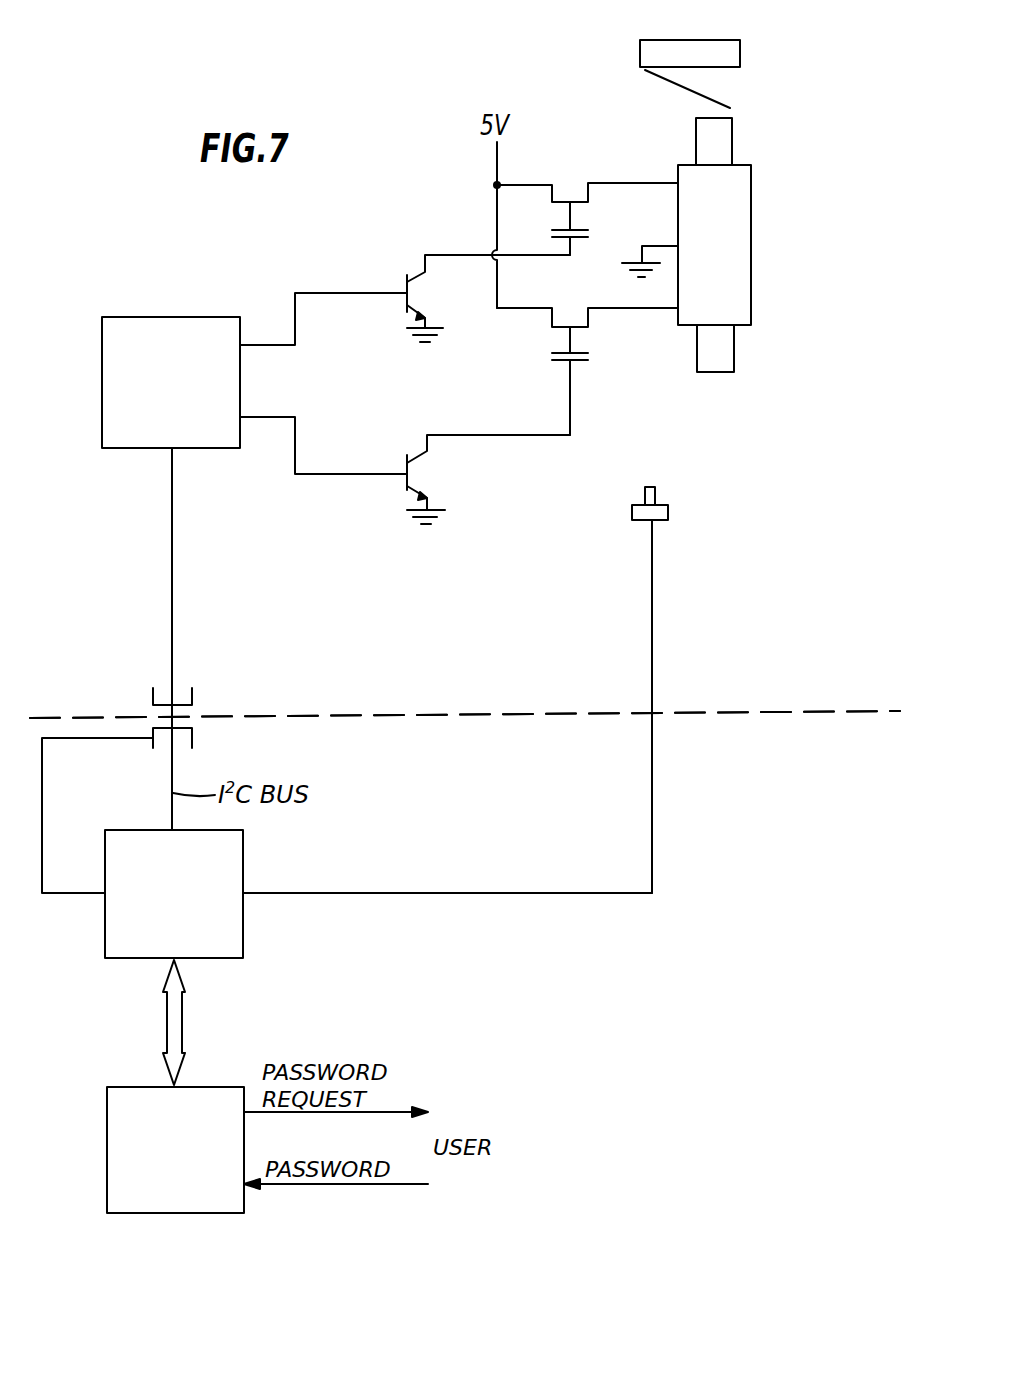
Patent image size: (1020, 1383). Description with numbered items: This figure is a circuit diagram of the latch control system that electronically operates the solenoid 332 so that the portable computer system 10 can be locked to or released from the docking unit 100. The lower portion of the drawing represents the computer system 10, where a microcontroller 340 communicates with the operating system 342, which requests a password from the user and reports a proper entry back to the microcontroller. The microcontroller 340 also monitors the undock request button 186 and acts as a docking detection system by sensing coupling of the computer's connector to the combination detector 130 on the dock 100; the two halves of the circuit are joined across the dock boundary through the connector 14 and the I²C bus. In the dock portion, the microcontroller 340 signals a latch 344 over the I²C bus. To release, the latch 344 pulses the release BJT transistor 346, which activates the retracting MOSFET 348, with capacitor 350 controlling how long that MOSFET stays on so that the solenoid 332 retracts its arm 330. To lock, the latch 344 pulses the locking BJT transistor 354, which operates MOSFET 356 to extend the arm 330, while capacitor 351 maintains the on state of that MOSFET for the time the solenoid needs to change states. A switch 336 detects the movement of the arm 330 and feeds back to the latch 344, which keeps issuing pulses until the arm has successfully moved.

The switch 336 is at (740, 52).
The solenoid 332 is at (751, 258).
The arm 330 is at (734, 350).
The retracting MOSFET 348 is at (586, 199).
The capacitor 350 is at (580, 230).
The MOSFET 356 is at (590, 318).
The capacitor 351 is at (580, 365).
The release BJT transistor 346 is at (417, 276).
The locking BJT transistor 354 is at (408, 473).
The latch 344 is at (150, 316).
The undock request button 186 is at (668, 512).
The combination detector 130 is at (192, 697).
The system bus connector 14 is at (192, 740).
The microcontroller 340 is at (243, 916).
The operating system 342 is at (170, 1214).
The docking unit 100 is at (465, 698).
The portable computer system 10 is at (465, 728).